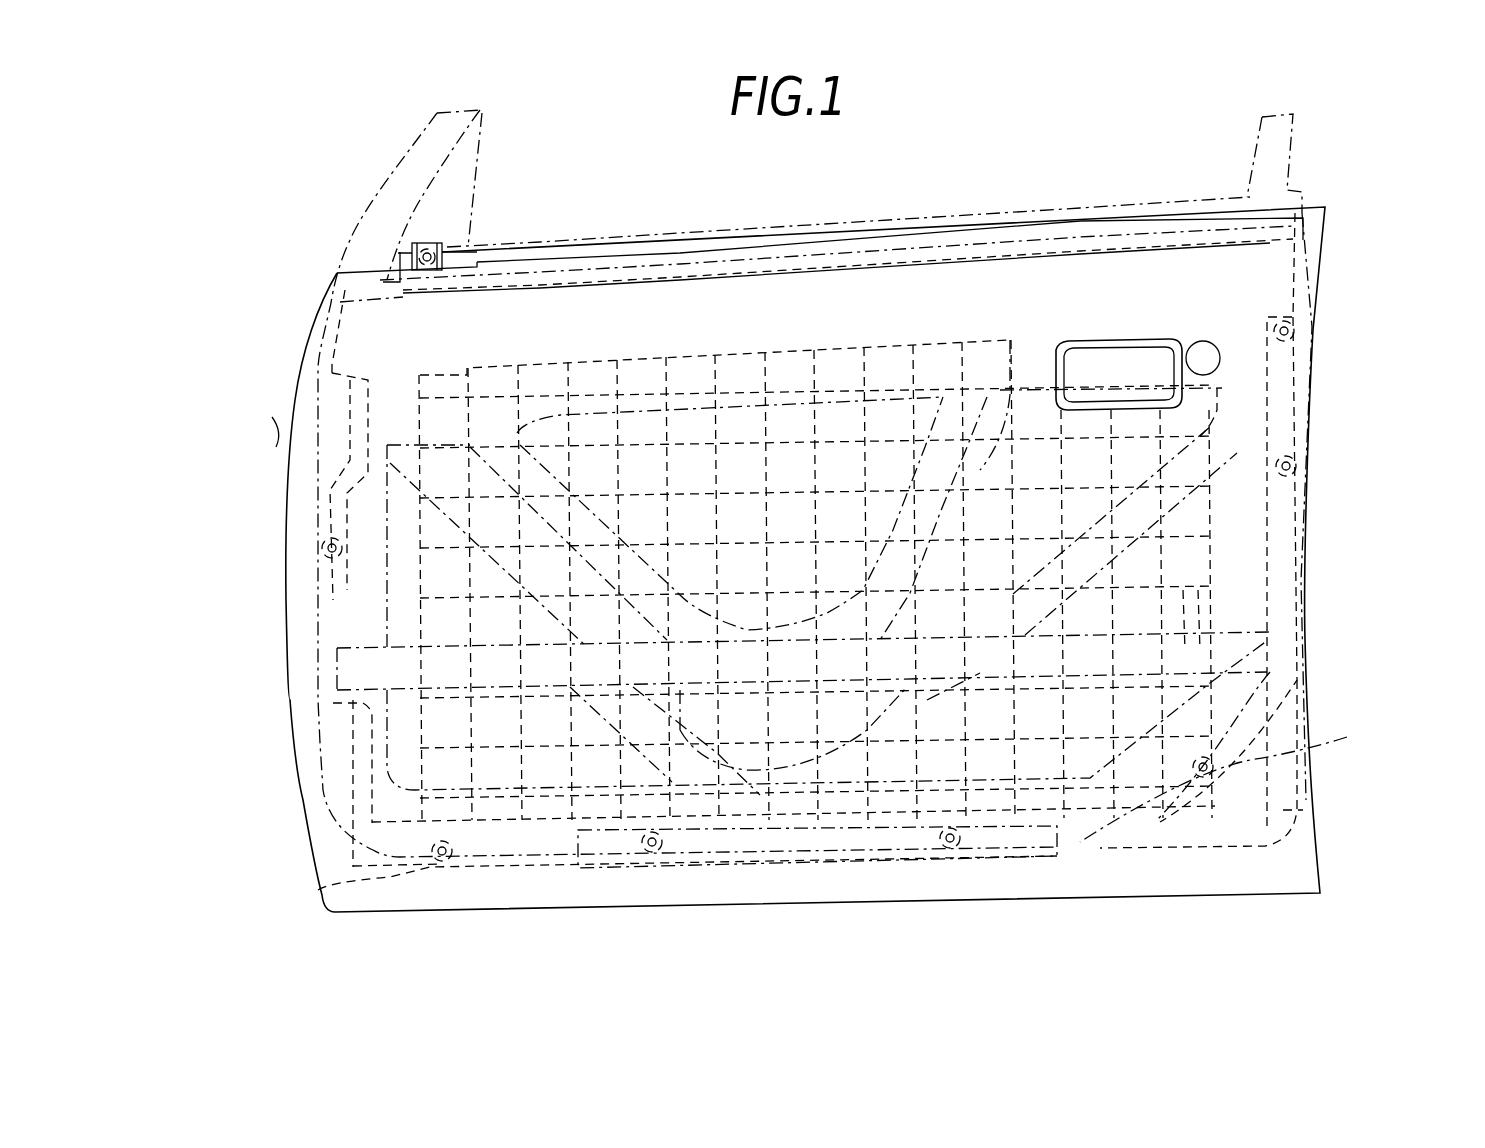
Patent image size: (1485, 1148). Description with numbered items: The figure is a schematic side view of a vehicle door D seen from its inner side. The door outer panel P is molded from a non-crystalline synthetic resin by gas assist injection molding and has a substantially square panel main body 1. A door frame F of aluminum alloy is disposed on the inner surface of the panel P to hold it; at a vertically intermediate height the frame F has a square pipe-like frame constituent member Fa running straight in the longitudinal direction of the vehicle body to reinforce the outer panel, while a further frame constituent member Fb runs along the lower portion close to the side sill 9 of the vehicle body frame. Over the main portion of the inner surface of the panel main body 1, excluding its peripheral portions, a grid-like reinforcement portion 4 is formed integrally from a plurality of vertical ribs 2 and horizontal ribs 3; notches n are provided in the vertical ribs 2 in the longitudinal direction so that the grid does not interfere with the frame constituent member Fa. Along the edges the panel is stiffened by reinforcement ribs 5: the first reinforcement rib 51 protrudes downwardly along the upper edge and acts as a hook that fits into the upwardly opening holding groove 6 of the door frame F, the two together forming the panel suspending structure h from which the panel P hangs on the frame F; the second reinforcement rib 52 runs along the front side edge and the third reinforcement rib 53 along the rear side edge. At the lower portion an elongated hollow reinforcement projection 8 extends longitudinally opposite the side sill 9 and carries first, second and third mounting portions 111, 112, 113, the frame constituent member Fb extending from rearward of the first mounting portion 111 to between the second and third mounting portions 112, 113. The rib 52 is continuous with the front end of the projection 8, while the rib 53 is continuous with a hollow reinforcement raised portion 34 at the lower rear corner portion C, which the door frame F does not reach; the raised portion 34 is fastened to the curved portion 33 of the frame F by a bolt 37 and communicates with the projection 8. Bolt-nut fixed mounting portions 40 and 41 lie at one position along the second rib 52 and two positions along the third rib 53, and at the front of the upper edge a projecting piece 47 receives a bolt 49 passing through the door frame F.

The panel main body 1 is at (1312, 356).
The vertical ribs 2 is at (840, 340).
The horizontal ribs 3 is at (742, 352).
The grid-like reinforcement portion 4 is at (920, 335).
The reinforcement ribs 5 is at (918, 755).
The holding groove 6 is at (418, 765).
The elongated hollow reinforcement projection 8 is at (1157, 720).
The side sill 9 is at (211, 585).
The curved portion 33 is at (1371, 738).
The hollow reinforcement raised portion 34 is at (1310, 806).
The bolt 37 is at (1201, 782).
The mounting portion 40 is at (325, 535).
The mounting portions 41 is at (1270, 330).
The projecting piece 47 is at (413, 243).
The bolt 49 is at (469, 250).
The first reinforcement rib 51 is at (625, 285).
The second reinforcement rib 52 is at (350, 738).
The third reinforcement rib 53 is at (1278, 380).
The first mounting portion 111 is at (960, 840).
The second mounting portion 112 is at (660, 850).
The third mounting portion 113 is at (318, 890).
The corner portion C is at (1320, 840).
The vehicle door D is at (1348, 290).
The door frame F is at (1197, 185).
The frame constituent member Fa is at (913, 602).
The frame constituent member Fb is at (797, 863).
The door outer panel P is at (1340, 240).
The panel suspending structure h is at (660, 170).
The notches n is at (1193, 653).